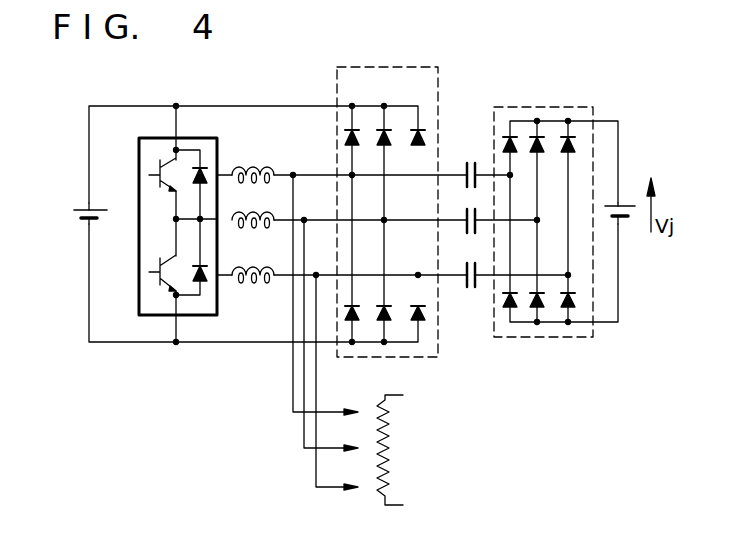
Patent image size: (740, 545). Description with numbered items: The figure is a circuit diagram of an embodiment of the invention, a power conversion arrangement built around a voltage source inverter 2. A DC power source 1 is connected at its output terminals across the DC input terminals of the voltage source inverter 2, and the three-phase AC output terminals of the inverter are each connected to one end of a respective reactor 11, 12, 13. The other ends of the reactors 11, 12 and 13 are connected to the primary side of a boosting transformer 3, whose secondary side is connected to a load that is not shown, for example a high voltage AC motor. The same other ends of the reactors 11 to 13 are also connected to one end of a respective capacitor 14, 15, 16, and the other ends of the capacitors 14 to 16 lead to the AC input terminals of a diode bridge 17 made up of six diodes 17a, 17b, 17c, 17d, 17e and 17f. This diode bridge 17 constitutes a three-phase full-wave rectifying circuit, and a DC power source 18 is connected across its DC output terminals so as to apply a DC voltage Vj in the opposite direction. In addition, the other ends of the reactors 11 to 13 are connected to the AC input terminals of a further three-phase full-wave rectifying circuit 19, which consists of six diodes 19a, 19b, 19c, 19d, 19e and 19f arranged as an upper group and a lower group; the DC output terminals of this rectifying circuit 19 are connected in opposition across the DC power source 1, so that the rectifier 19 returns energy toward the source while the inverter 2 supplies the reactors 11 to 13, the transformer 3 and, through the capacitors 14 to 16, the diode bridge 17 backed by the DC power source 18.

The DC power source 1 is at (75, 206).
The voltage source inverter 2 is at (185, 138).
The boosting transformer 3 is at (393, 436).
The reactor 11 is at (251, 166).
The reactor 12 is at (251, 214).
The reactor 13 is at (251, 269).
The capacitor 14 is at (476, 160).
The capacitor 15 is at (469, 213).
The capacitor 16 is at (469, 266).
The diode bridge 17 is at (543, 221).
The diode 17a is at (502, 128).
The diode 17b is at (536, 134).
The diode 17c is at (577, 142).
The diode 17d is at (504, 312).
The diode 17e is at (531, 312).
The diode 17f is at (575, 312).
The DC power source 18 is at (630, 218).
The three-phase full-wave rectifying circuit 19 is at (374, 210).
The diode 19a is at (345, 135).
The diode 19b is at (378, 128).
The diode 19c is at (412, 128).
The diode 19d is at (343, 328).
The diode 19e is at (377, 328).
The diode 19f is at (425, 328).